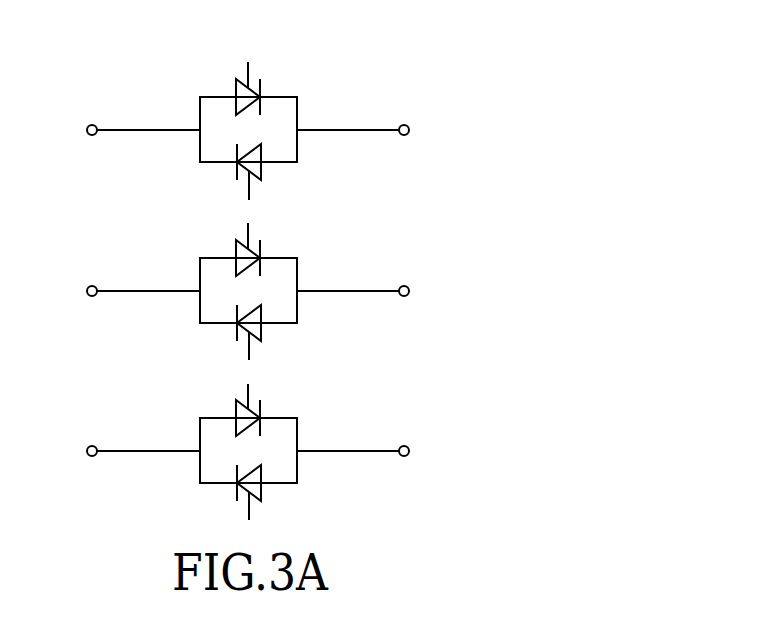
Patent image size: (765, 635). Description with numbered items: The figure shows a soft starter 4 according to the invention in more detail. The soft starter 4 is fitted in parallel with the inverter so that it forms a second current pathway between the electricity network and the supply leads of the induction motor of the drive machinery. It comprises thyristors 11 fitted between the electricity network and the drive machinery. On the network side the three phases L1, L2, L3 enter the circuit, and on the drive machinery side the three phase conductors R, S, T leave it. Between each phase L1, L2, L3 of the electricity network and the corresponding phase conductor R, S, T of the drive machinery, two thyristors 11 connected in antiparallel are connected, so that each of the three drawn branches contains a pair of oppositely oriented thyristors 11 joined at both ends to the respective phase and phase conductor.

The soft starter 4 is at (258, 271).
The thyristor 11 is at (235, 88).
The phase L1 is at (128, 131).
The phase L2 is at (128, 292).
The phase L3 is at (128, 452).
The phase conductor R is at (366, 131).
The phase conductor S is at (365, 292).
The phase conductor T is at (365, 452).